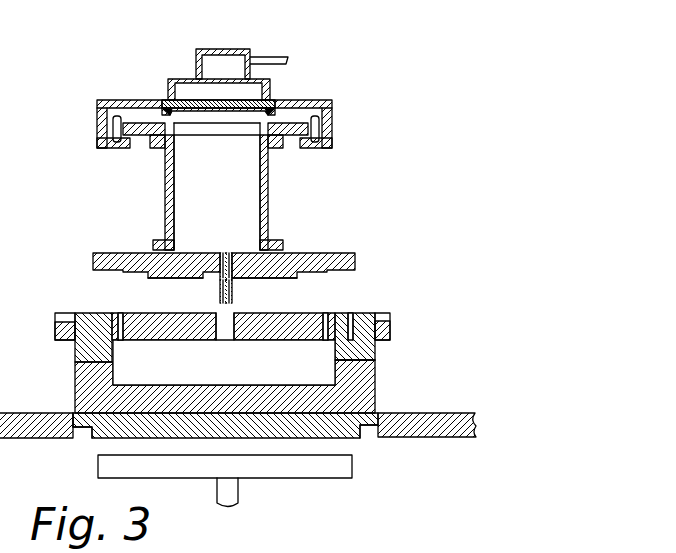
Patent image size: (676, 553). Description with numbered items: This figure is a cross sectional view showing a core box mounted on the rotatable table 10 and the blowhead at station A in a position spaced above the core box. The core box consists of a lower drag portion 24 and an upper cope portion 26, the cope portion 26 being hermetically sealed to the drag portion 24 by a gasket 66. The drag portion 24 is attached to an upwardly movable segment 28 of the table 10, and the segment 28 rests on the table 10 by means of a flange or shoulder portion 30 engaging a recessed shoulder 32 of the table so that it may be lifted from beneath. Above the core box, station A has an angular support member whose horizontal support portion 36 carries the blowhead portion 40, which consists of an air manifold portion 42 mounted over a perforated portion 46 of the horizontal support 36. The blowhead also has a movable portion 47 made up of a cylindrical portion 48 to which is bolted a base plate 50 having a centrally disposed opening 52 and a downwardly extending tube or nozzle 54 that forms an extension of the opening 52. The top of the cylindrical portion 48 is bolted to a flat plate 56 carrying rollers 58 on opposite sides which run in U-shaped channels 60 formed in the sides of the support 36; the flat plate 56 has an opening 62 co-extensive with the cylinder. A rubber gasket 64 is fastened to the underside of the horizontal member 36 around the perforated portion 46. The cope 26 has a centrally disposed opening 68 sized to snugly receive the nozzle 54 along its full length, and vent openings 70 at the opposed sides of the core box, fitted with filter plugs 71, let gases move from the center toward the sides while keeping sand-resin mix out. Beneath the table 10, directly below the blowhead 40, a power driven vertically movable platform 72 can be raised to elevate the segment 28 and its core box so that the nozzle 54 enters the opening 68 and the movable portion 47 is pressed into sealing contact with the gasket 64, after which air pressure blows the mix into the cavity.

The station A is at (97, 98).
The table 10 is at (430, 413).
The drag portion 24 is at (372, 388).
The cope portion 26 is at (378, 316).
The segment 28 is at (358, 438).
The flange or shoulder portion 30 is at (76, 413).
The recessed shoulder 32 is at (86, 440).
The horizontal support portion 36 is at (318, 100).
The blowhead portion 40 is at (215, 49).
The air manifold portion 42 is at (268, 64).
The perforated portion 46 is at (192, 103).
The movable portion 47 is at (167, 172).
The cylindrical portion 48 is at (268, 210).
The base plate 50 is at (310, 262).
The centrally disposed opening 52 is at (226, 254).
The tube or nozzle 54 is at (219, 303).
The flat plate 56 is at (156, 138).
The rollers 58 is at (112, 126).
The U-shaped channels 60 is at (110, 148).
The opening 62 is at (222, 135).
The gasket 64 is at (170, 106).
The gasket 66 is at (356, 362).
The centrally disposed opening 68 is at (226, 326).
The vent openings 70 is at (121, 322).
The filter plugs 71 is at (323, 330).
The platform 72 is at (312, 470).